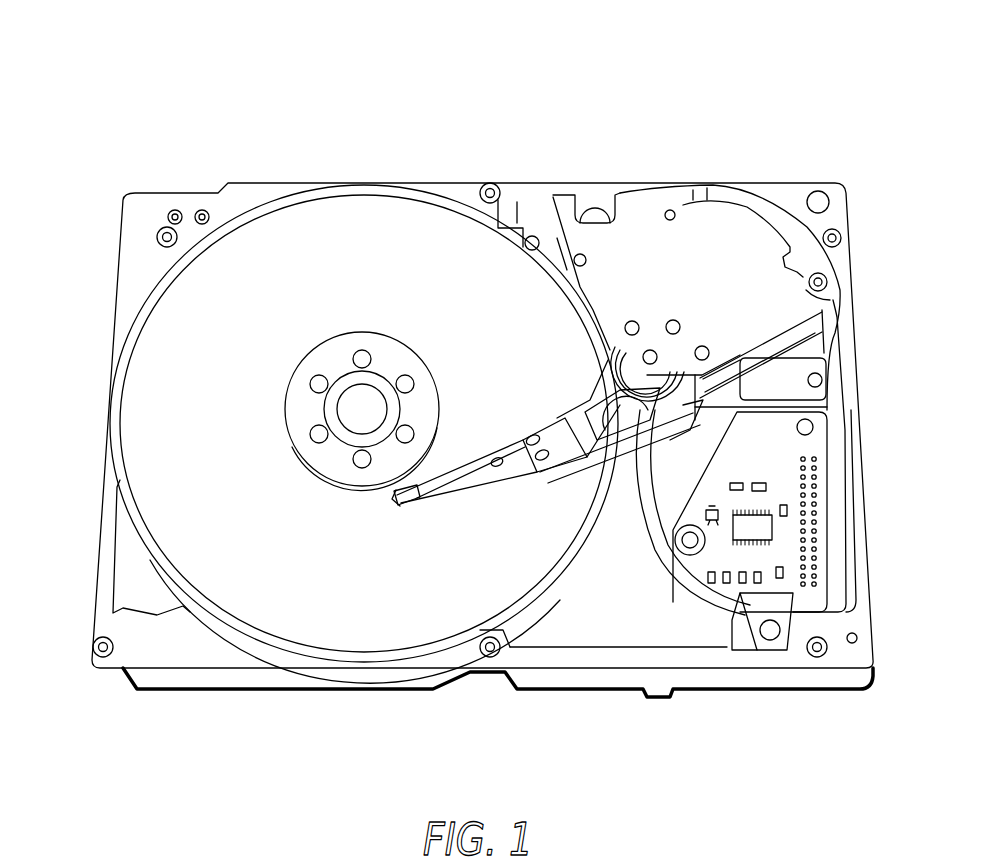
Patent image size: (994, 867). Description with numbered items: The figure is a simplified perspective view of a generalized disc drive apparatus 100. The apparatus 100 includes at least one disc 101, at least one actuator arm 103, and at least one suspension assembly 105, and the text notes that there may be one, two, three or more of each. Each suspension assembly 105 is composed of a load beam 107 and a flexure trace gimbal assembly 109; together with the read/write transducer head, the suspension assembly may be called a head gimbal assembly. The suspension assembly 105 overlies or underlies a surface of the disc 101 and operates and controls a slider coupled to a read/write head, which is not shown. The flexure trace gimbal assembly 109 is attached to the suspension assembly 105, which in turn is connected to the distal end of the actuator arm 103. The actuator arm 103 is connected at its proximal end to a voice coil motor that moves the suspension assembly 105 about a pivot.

The disc drive apparatus 100 is at (705, 47).
The disc 101 is at (177, 312).
The actuator arm 103 is at (606, 440).
The suspension assembly 105 is at (462, 528).
The load beam 107 is at (467, 460).
The flexure trace gimbal assembly 109 is at (392, 499).